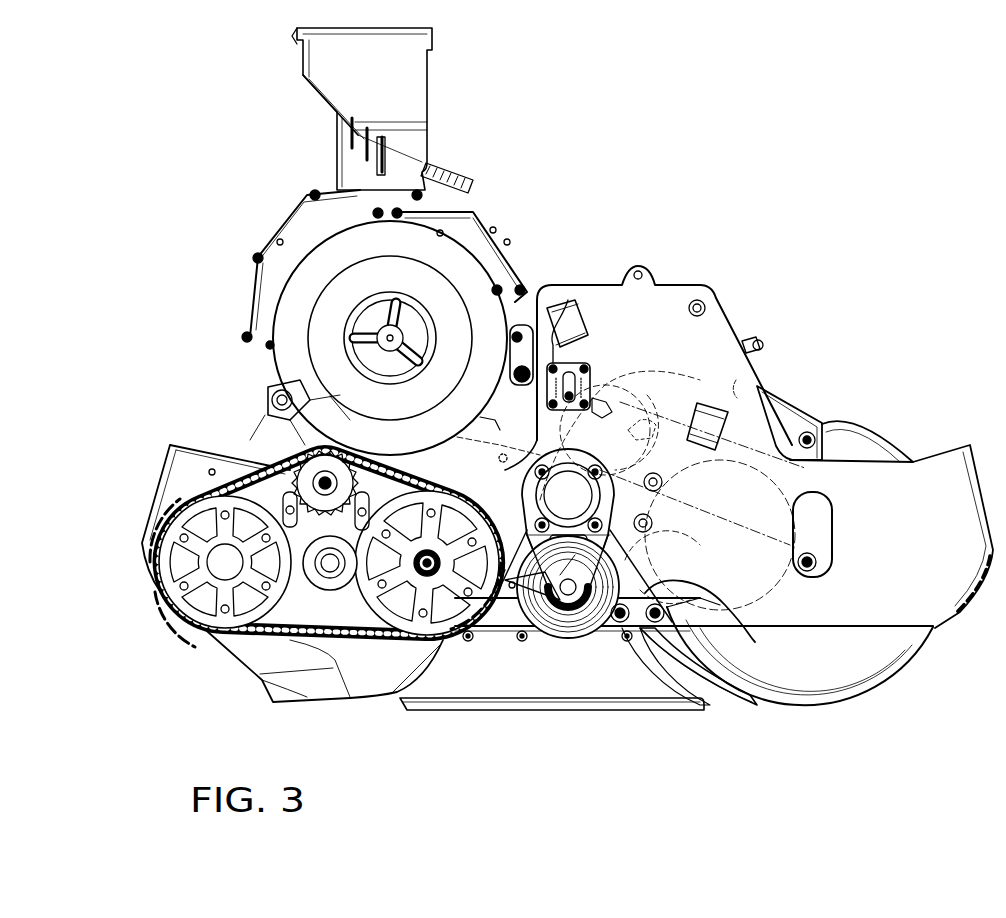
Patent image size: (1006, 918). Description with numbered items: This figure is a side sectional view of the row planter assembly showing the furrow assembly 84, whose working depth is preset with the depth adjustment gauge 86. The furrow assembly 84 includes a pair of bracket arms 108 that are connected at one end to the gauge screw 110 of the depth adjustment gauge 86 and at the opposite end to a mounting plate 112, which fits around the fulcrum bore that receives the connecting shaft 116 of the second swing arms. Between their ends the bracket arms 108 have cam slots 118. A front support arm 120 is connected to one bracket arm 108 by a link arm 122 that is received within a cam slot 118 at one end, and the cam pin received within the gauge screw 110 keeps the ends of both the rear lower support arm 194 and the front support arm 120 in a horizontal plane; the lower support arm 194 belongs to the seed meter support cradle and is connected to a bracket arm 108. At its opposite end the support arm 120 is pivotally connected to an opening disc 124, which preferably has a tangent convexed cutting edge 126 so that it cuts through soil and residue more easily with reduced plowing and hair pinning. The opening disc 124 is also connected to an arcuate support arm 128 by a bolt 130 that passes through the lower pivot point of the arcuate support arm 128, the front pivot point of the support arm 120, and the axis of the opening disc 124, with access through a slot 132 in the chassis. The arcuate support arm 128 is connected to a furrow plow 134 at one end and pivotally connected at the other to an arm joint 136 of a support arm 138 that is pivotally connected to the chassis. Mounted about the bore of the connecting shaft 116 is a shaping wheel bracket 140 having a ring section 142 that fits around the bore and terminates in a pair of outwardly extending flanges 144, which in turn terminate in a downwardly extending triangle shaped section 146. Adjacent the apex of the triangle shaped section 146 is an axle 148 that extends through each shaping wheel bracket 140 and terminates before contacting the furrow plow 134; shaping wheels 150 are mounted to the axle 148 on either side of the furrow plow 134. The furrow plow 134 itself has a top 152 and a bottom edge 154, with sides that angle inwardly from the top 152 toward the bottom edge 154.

The furrow assembly 84 is at (681, 734).
The depth adjustment gauge 86 is at (569, 300).
The bracket arms 108 is at (683, 400).
The gauge screw 110 is at (580, 362).
The mounting plate 112 is at (652, 584).
The connecting shaft 116 is at (507, 585).
The cam slots 118 is at (647, 395).
The support arm 120 is at (757, 510).
The link arm 122 is at (598, 398).
The opening disc 124 is at (843, 452).
The tangent convexed cutting edge 126 is at (890, 440).
The arcuate support arm 128 is at (780, 590).
The bolt 130 is at (816, 558).
The slot 132 is at (832, 523).
The furrow plow 134 is at (757, 703).
The arm joint 136 is at (790, 400).
The support arm 138 is at (745, 382).
The shaping wheel bracket 140 is at (614, 498).
The ring section 142 is at (640, 622).
The flanges 144 is at (603, 628).
The triangle shaped section 146 is at (538, 612).
The axle 148 is at (590, 615).
The shaping wheels 150 is at (538, 612).
The top 152 is at (737, 625).
The bottom edge 154 is at (440, 713).
The lower support arm 194 is at (325, 535).